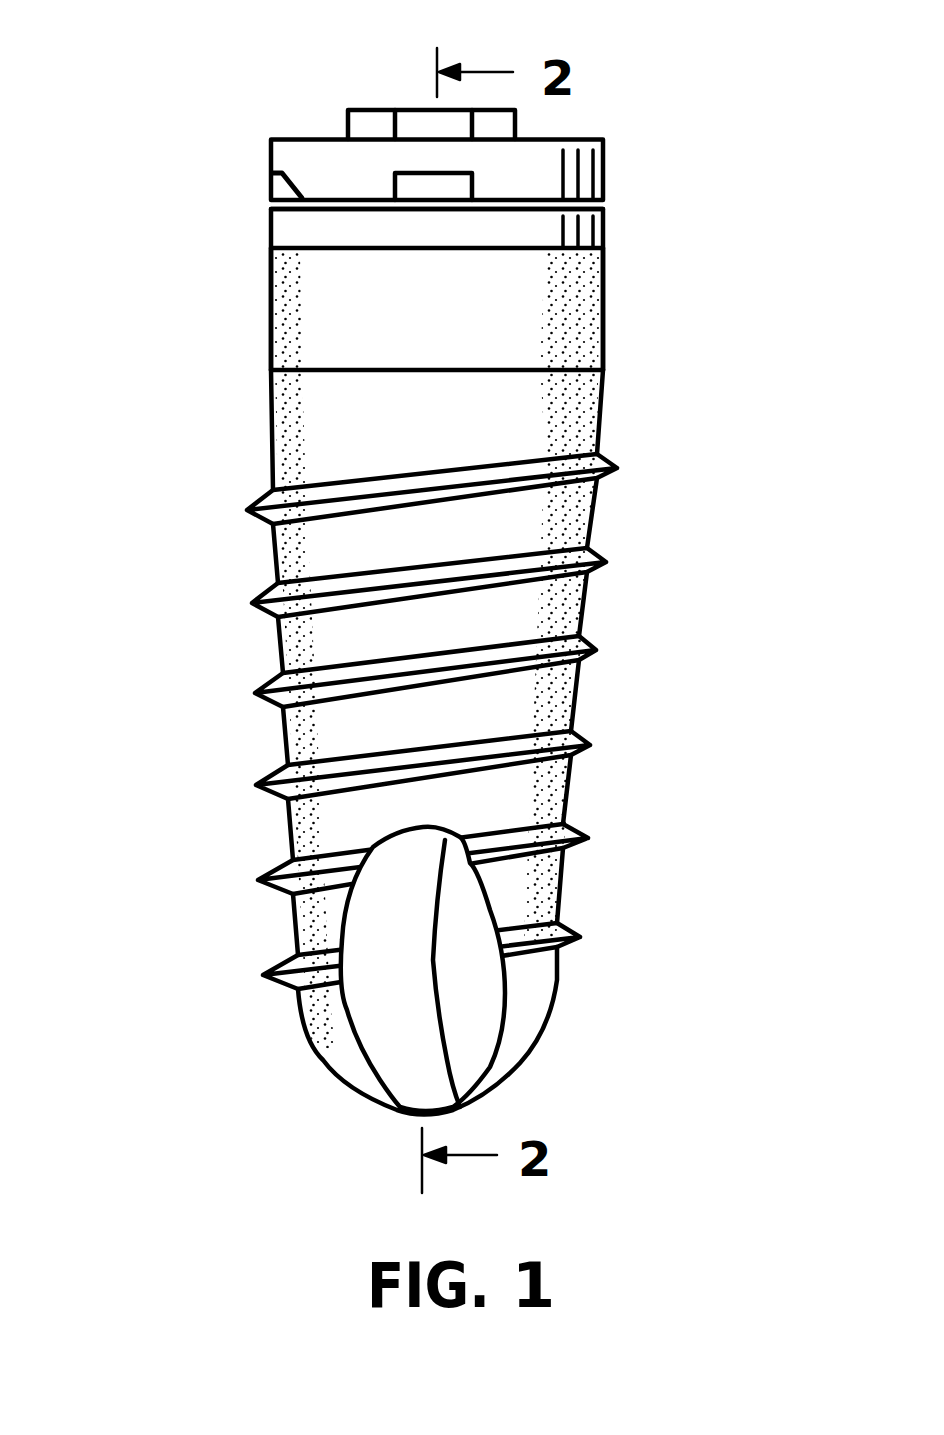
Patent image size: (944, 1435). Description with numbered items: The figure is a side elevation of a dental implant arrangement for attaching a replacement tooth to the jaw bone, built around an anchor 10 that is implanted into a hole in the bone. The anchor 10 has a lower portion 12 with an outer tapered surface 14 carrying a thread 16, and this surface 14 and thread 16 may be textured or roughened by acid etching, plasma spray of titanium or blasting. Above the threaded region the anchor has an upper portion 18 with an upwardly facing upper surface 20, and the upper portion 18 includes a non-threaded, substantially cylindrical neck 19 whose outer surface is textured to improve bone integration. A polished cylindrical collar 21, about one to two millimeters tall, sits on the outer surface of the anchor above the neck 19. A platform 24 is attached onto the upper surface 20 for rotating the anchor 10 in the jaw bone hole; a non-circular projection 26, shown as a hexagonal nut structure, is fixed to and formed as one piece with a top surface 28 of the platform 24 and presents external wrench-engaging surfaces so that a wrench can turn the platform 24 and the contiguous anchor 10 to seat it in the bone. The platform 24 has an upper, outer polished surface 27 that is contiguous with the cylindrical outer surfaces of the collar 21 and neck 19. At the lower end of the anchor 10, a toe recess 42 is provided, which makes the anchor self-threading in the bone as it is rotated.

The anchor 10 is at (446, 569).
The lower portion 12 is at (477, 721).
The outer tapered surface 14 is at (552, 793).
The thread 16 is at (599, 646).
The upper portion 18 is at (603, 300).
The neck 19 is at (273, 301).
The upper surface 20 is at (388, 104).
The polished cylindrical collar 21 is at (408, 209).
The platform 24 is at (583, 140).
The non-circular projection 26 is at (363, 112).
The upper outer polished surface 27 is at (604, 173).
The top surface 28 is at (300, 137).
The toe recess 42 is at (383, 1030).